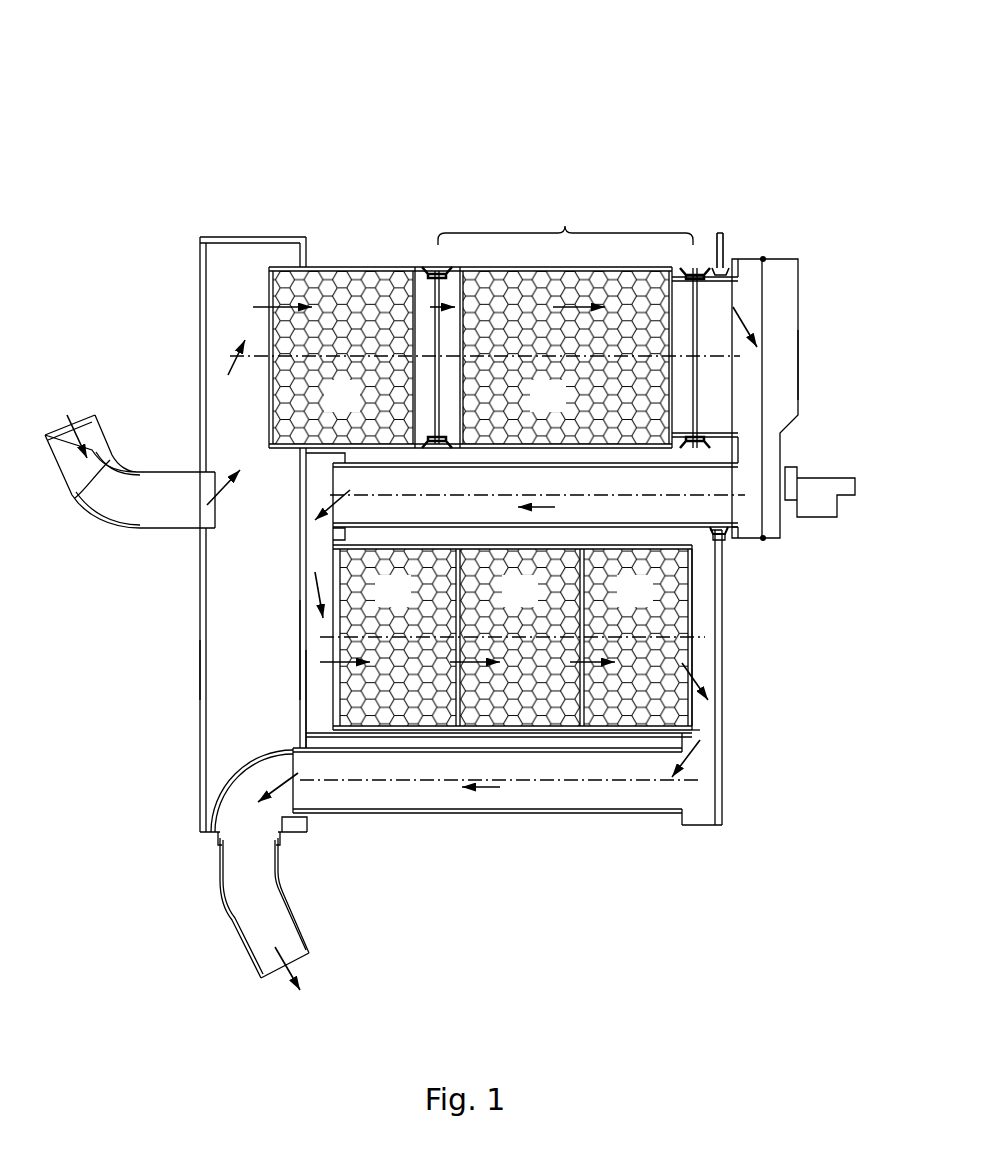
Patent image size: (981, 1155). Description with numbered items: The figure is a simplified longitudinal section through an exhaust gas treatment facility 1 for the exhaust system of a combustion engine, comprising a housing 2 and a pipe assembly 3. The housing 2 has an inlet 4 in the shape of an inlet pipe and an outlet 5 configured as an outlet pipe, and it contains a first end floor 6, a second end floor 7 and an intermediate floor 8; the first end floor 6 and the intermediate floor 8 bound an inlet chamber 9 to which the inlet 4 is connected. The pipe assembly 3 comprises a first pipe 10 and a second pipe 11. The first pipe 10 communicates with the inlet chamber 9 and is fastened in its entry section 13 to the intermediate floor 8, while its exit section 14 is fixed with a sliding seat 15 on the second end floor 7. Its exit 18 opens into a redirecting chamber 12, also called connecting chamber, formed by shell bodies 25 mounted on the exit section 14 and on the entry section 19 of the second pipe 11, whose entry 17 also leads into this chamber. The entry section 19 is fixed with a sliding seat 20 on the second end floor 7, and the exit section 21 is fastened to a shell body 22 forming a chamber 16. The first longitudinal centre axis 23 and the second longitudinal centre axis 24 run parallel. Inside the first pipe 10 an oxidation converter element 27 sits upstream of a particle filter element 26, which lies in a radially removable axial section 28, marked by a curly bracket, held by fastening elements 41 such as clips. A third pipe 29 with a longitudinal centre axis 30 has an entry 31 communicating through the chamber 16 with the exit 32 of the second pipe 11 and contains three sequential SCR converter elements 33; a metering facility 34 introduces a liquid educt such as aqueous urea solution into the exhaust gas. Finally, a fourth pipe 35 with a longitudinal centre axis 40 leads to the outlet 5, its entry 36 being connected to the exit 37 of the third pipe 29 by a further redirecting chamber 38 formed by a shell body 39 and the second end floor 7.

The exhaust gas treatment facility 1 is at (752, 165).
The housing 2 is at (253, 237).
The pipe assembly 3 is at (603, 265).
The inlet 4 is at (82, 430).
The outlet 5 is at (232, 928).
The first end floor 6 is at (205, 670).
The second end floor 7 is at (725, 690).
The intermediate floor 8 is at (283, 722).
The inlet chamber 9 is at (241, 623).
The first pipe 10 is at (345, 265).
The second pipe 11 is at (333, 545).
The redirecting chamber 12 is at (768, 346).
The entry section 13 is at (277, 265).
The exit section 14 is at (740, 280).
The sliding seat 15 is at (720, 262).
The chamber 16 is at (300, 650).
The entry 17 is at (742, 510).
The exit 18 is at (748, 300).
The entry section 19 is at (728, 527).
The sliding seat 20 is at (718, 537).
The exit section 21 is at (330, 500).
The shell body 22 is at (310, 462).
The first longitudinal centre axis 23 is at (380, 330).
The second longitudinal centre axis 24 is at (760, 487).
The shell body 25 is at (800, 345).
The particle filter element 26 is at (536, 408).
The oxidation converter element 27 is at (330, 408).
The radially removable axial section 28 is at (565, 224).
The third pipe 29 is at (413, 737).
The longitudinal centre axis 30 is at (722, 648).
The entry 31 is at (300, 700).
The exit 32 is at (325, 535).
The SCR converter 33 is at (381, 603).
The metering facility 34 is at (840, 473).
The fourth pipe 35 is at (560, 818).
The entry 36 is at (685, 793).
The exit 37 is at (695, 617).
The further redirecting chamber 38 is at (703, 755).
The shell body 39 is at (698, 827).
The longitudinal centre axis 40 is at (530, 795).
The fastening elements 41 is at (436, 265).